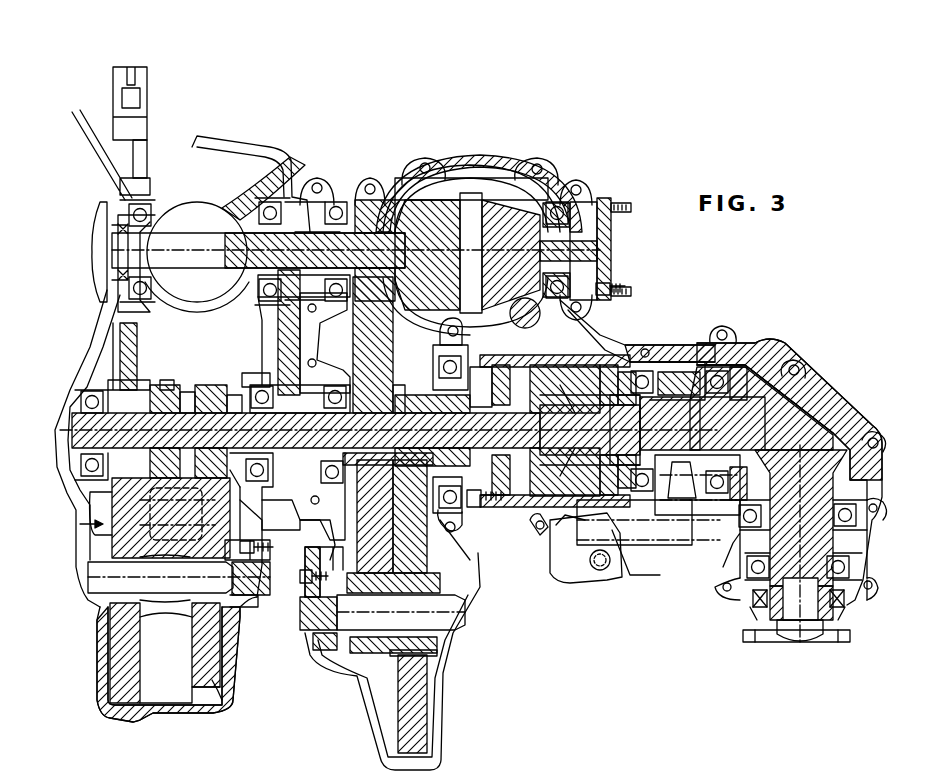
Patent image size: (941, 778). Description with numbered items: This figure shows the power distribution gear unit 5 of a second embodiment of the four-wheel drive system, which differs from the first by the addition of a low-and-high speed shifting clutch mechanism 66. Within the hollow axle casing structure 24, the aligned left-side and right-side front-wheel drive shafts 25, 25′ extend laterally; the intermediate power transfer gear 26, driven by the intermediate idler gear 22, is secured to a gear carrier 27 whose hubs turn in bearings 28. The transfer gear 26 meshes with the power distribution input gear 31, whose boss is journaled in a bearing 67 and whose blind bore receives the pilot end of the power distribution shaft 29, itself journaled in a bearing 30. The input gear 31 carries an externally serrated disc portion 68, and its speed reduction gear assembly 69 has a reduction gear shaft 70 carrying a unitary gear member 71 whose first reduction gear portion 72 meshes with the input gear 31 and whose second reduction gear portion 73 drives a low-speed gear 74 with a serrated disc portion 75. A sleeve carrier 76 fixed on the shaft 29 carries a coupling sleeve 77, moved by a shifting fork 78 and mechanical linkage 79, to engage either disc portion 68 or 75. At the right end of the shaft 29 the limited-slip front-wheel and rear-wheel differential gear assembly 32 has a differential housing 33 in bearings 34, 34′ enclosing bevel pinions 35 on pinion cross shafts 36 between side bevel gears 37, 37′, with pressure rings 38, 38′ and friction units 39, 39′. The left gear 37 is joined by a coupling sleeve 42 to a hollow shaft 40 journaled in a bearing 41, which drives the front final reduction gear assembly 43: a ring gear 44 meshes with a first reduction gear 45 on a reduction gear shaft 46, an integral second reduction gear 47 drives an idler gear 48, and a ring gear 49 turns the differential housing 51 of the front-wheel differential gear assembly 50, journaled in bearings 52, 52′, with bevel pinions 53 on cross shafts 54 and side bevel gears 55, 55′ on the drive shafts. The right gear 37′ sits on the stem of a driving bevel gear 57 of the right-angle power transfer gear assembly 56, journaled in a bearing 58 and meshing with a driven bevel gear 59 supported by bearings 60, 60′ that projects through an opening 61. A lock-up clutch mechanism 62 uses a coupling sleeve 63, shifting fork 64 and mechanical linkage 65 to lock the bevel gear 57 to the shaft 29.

The power distribution gear unit 5 is at (700, 268).
The intermediate idler gear 22 is at (146, 76).
The axle casing structure 24 is at (258, 150).
The left-side front-wheel drive shaft 25 is at (196, 245).
The right-side front-wheel drive shaft 25′ is at (596, 243).
The intermediate power transfer gear 26 is at (140, 145).
The gear carrier 27 is at (182, 195).
The bearing 28 is at (128, 205).
The power distribution shaft 29 is at (404, 443).
The bearing 30 is at (268, 395).
The power distribution input gear 31 is at (118, 395).
The limited-slip front-wheel and rear-wheel differential gear assembly 32 is at (582, 575).
The differential housing 33 is at (555, 545).
The bearing 34 is at (462, 520).
The bearing 34′ is at (646, 370).
The differential bevel pinion 35 is at (535, 528).
The pinion cross shaft 36 is at (548, 372).
The left-side differential side bevel gear 37 is at (530, 415).
The right-side differential side bevel gear 37′ is at (590, 415).
The pressure ring 38 is at (502, 368).
The pressure ring 38′ is at (605, 368).
The left-side friction unit 39 is at (482, 368).
The friction unit 39′ is at (612, 370).
The hollow shaft 40 is at (396, 400).
The bearing 41 is at (322, 518).
The coupling sleeve 42 is at (440, 355).
The front final reduction gear assembly 43 is at (300, 560).
The ring gear 44 is at (410, 398).
The first reduction gear 45 is at (428, 722).
The reduction gear shaft 46 is at (426, 676).
The second reduction gear 47 is at (372, 648).
The idler gear 48 is at (388, 533).
The ring gear 49 is at (370, 195).
The front-wheel differential gear assembly 50 is at (472, 170).
The differential housing 51 is at (520, 180).
The bearing 52 is at (326, 190).
The bearing 52′ is at (590, 205).
The differential bevel pinion 53 is at (430, 190).
The pinion cross shaft 54 is at (460, 250).
The differential side bevel gear 55 is at (418, 182).
The differential side bevel gear 55′ is at (545, 182).
The right-angle power transfer gear assembly 56 is at (826, 415).
The driving bevel gear 57 is at (760, 380).
The bearing 58 is at (733, 362).
The driven bevel gear 59 is at (818, 462).
The bearing 60 is at (858, 528).
The bearing 60′ is at (858, 568).
The opening 61 is at (755, 607).
The lock-up clutch mechanism 62 is at (676, 535).
The coupling sleeve 63 is at (680, 392).
The shifting fork 64 is at (695, 462).
The mechanical linkage 65 is at (626, 555).
The low-and-high speed shifting clutch mechanism 66 is at (88, 532).
The bearing 67 is at (95, 395).
The externally serrated disc portion 68 is at (162, 385).
The speed reduction gear assembly 69 is at (177, 690).
The reduction gear shaft 70 is at (181, 586).
The unitary gear member 71 is at (166, 620).
The first reduction gear portion 72 is at (110, 685).
The second reduction gear portion 73 is at (212, 686).
The low-speed gear 74 is at (234, 396).
The externally serrated disc portion 75 is at (188, 392).
The sleeve carrier 76 is at (220, 388).
The coupling sleeve 77 is at (170, 382).
The shifting fork 78 is at (190, 515).
The mechanical linkage 79 is at (80, 520).